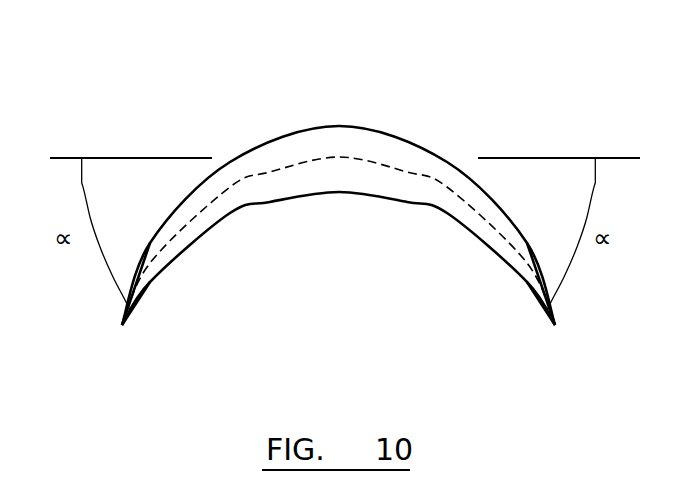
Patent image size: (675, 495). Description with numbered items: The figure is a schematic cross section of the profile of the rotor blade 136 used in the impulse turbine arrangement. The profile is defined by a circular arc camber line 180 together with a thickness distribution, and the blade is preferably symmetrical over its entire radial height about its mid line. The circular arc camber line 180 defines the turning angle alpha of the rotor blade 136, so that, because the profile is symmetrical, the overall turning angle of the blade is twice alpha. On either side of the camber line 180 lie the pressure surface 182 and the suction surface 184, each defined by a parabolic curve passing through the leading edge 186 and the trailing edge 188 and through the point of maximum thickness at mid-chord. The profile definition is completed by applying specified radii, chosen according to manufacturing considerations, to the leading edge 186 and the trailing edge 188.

The rotor blade 136 is at (338, 215).
The circular arc camber line 180 is at (336, 140).
The pressure surface 182 is at (380, 127).
The suction surface 184 is at (340, 192).
The leading edge 186 is at (140, 305).
The trailing edge 188 is at (537, 305).